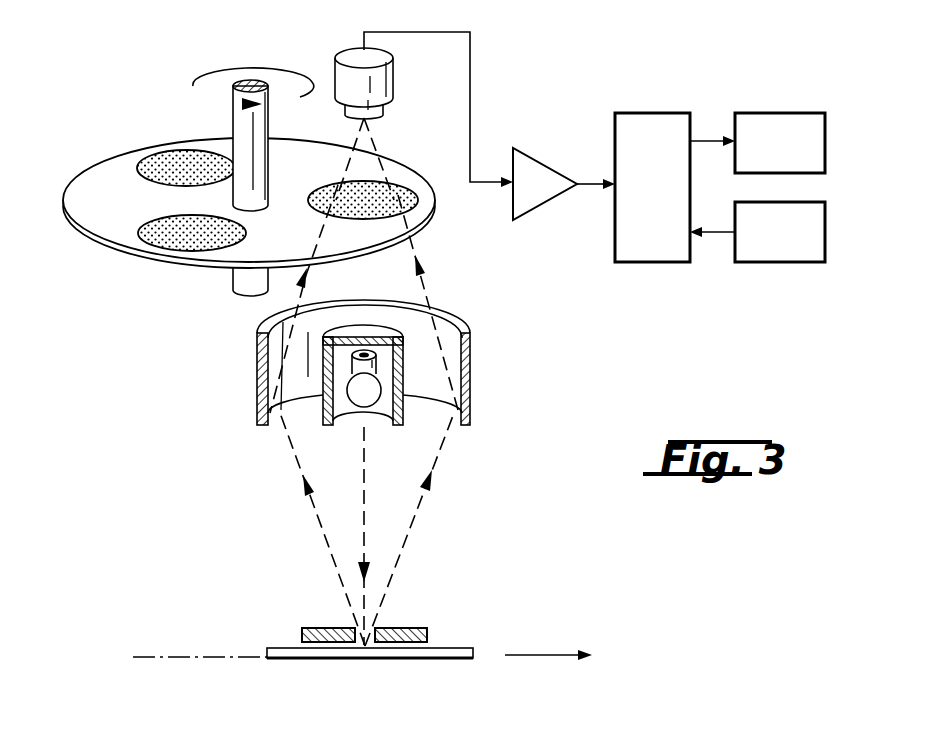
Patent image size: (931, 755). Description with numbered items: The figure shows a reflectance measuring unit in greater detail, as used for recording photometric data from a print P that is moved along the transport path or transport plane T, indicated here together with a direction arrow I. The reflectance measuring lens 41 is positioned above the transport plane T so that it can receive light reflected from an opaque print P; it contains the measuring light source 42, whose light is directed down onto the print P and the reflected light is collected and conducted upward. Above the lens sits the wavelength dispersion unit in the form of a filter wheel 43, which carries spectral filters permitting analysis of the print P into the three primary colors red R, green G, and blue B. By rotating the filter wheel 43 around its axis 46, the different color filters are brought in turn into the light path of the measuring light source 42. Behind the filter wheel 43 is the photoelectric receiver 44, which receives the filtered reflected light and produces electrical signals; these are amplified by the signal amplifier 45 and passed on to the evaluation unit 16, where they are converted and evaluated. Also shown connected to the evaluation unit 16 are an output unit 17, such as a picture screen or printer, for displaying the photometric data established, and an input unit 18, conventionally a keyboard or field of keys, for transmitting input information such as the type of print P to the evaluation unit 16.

The filter wheel 43 is at (103, 172).
The green filter G is at (160, 158).
The blue filter B is at (180, 245).
The red filter R is at (412, 202).
The axis 46 is at (238, 132).
The photoelectric receiver 44 is at (341, 80).
The signal amplifier 45 is at (545, 165).
The evaluation unit 16 is at (660, 250).
The output unit 17 is at (723, 62).
The input unit 18 is at (805, 255).
The reflectance measuring lens 41 is at (494, 412).
The light source 42 is at (368, 395).
The print P is at (457, 651).
The transport plane T is at (202, 655).
The transport direction I is at (517, 655).